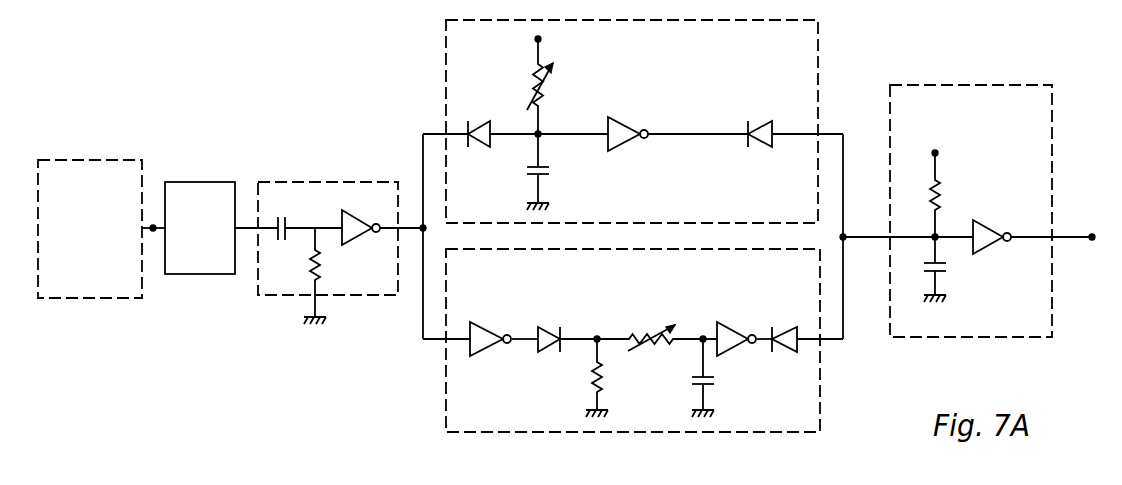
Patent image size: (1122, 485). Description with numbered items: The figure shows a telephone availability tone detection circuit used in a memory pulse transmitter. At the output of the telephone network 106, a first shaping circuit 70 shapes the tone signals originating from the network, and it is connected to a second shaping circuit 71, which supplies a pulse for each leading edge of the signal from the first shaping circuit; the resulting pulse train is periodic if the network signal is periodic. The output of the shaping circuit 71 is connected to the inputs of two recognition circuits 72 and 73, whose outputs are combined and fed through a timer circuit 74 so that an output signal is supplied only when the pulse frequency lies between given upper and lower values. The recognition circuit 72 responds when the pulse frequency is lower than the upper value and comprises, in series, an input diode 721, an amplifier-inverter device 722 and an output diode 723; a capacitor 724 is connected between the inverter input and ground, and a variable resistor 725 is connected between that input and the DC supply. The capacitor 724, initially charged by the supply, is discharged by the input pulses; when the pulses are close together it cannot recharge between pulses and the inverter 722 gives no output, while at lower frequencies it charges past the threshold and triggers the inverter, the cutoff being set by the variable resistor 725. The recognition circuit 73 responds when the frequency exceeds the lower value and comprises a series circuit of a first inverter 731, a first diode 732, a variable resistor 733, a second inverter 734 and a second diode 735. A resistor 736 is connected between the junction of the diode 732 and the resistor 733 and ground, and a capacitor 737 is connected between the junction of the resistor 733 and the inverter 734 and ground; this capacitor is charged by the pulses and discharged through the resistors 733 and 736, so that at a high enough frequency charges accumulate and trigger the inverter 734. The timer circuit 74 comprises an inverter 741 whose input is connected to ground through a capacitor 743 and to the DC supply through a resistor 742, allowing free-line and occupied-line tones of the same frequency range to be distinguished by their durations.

The telephone network 106 is at (90, 229).
The first shaping circuit 70 is at (200, 228).
The second shaping circuit 71 is at (340, 253).
The recognition circuit 72 is at (632, 121).
The input diode 721 is at (461, 101).
The amplifier-inverter device 722 is at (624, 118).
The output diode 723 is at (744, 123).
The capacitor 724 is at (548, 172).
The variable resistor 725 is at (543, 101).
The recognition circuit 73 is at (633, 340).
The first inverter 731 is at (479, 303).
The first diode 732 is at (540, 327).
The variable resistor 733 is at (648, 303).
The second inverter 734 is at (727, 302).
The second diode 735 is at (777, 305).
The resistor 736 is at (610, 378).
The capacitor 737 is at (712, 378).
The timer circuit 74 is at (971, 211).
The inverter 741 is at (984, 222).
The resistor 742 is at (950, 186).
The capacitor 743 is at (946, 270).